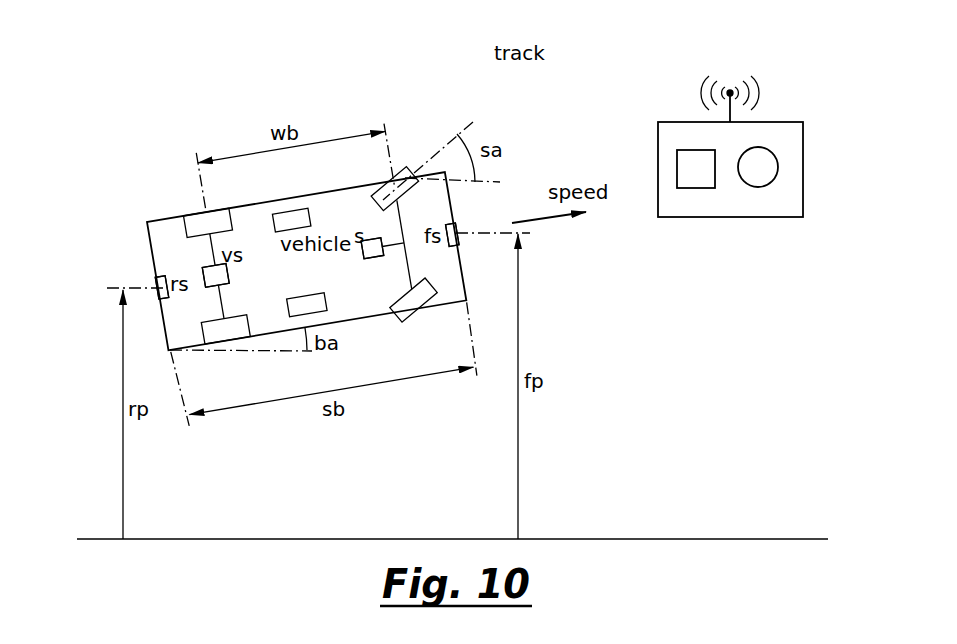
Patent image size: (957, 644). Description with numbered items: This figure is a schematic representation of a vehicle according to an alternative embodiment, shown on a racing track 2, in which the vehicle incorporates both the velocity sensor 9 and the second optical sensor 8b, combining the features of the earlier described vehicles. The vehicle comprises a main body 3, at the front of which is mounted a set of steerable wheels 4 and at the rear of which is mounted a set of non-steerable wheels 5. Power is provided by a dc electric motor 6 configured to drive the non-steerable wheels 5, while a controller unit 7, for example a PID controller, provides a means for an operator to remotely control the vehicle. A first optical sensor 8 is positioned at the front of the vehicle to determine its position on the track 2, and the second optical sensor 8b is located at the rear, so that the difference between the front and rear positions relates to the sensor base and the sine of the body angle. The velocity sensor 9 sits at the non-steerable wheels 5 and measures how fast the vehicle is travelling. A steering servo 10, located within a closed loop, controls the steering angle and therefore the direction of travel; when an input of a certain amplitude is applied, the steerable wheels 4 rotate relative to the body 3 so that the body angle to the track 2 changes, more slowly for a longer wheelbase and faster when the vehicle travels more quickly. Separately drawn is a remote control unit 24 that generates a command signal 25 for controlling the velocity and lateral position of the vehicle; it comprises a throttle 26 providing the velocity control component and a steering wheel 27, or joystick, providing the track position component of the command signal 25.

The racing track 2 is at (452, 292).
The main body 3 is at (306, 261).
The steerable wheels 4 is at (403, 312).
The non-steerable wheels 5 is at (198, 215).
The dc electric motor 6 is at (293, 213).
The controller unit 7 is at (288, 308).
The first optical sensor 8 is at (456, 233).
The second optical sensor 8b is at (160, 276).
The velocity sensor 9 is at (211, 265).
The steering servo 10 is at (368, 258).
The remote control unit 24 is at (727, 218).
The command signal 25 is at (756, 87).
The throttle 26 is at (687, 173).
The steering wheel 27 is at (758, 183).